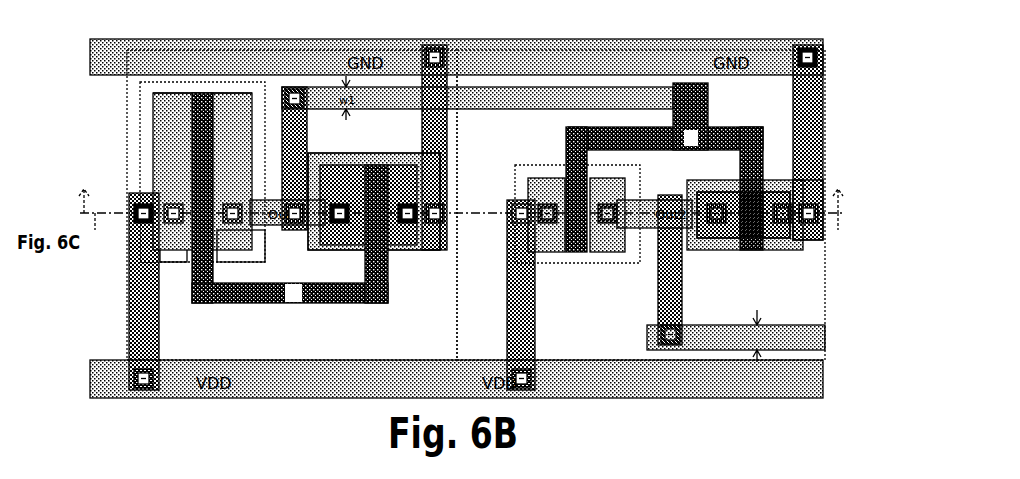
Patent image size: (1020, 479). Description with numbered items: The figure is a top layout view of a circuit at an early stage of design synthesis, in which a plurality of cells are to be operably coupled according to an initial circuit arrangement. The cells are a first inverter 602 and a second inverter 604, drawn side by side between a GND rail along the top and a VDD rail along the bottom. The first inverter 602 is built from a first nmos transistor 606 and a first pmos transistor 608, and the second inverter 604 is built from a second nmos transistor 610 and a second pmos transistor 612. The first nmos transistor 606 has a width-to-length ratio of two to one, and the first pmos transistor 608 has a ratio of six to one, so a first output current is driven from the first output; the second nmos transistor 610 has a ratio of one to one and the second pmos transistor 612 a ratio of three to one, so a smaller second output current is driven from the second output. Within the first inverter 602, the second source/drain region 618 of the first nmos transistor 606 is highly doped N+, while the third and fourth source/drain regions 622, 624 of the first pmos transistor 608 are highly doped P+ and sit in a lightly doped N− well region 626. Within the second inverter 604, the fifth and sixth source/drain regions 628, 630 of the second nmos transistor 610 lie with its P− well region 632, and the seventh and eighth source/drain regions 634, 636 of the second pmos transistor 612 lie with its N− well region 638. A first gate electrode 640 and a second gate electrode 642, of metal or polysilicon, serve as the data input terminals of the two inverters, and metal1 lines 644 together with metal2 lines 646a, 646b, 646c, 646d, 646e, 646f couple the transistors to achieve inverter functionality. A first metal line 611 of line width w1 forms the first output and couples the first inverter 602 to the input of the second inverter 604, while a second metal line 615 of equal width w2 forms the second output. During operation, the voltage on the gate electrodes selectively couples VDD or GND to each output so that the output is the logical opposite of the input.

The first inverter 602 is at (270, 50).
The second inverter 604 is at (608, 50).
The first nmos transistor 606 is at (406, 255).
The first pmos transistor 608 is at (276, 263).
The second nmos transistor 610 is at (752, 268).
The first metal line 611 is at (494, 106).
The second pmos transistor 612 is at (592, 286).
The second metal line 615 is at (815, 340).
The second source/drain region 618 is at (405, 158).
The third source/drain region 622 is at (190, 262).
The fourth source/drain region 624 is at (217, 264).
The well region 626 is at (258, 243).
The fifth source/drain region 628 is at (720, 250).
The sixth source/drain region 630 is at (800, 246).
The well region 632 is at (762, 250).
The seventh source/drain region 634 is at (565, 255).
The eighth source/drain region 636 is at (597, 255).
The well region 638 is at (616, 255).
The first gate electrode 640 is at (388, 295).
The second gate electrode 642 is at (717, 150).
The metal1 lines 644 is at (174, 203).
The metal2 line 646a is at (152, 333).
The metal2 line 646b is at (296, 150).
The metal2 line 646c is at (422, 132).
The metal2 line 646d is at (523, 333).
The metal2 line 646e is at (682, 305).
The metal2 line 646f is at (797, 116).